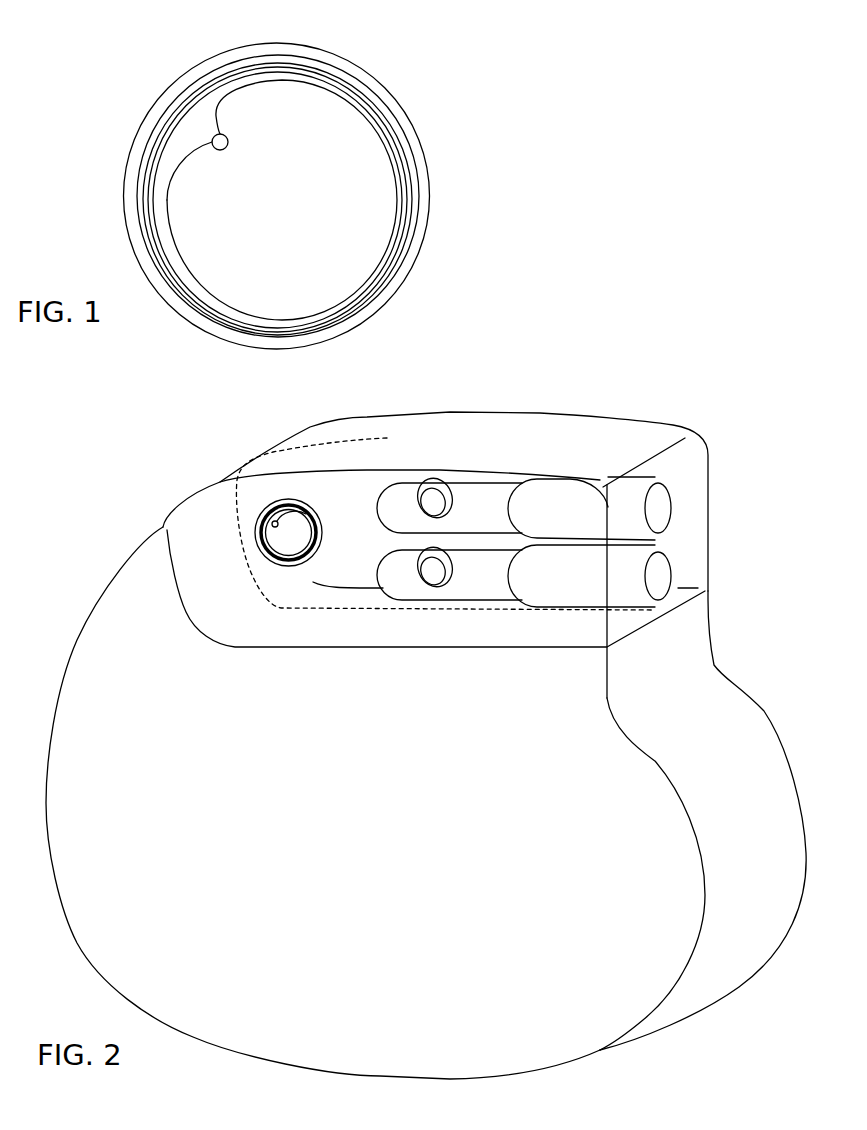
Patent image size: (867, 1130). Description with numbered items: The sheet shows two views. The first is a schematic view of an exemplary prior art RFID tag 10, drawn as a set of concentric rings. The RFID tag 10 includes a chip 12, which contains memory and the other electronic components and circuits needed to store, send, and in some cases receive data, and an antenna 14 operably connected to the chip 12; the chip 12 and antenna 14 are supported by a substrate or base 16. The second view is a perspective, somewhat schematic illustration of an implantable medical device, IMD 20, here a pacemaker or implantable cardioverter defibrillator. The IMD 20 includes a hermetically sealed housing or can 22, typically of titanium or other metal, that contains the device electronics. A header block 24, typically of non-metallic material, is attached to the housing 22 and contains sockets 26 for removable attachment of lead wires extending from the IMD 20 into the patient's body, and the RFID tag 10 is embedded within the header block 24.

In FIG. 1, the RFID tag 10 is at (415, 59).
In FIG. 2, the RFID tag 10 is at (257, 513).
In FIG. 1, the chip 12 is at (225, 150).
In FIG. 1, the antenna 14 is at (225, 77).
In FIG. 1, the substrate or base 16 is at (420, 153).
In FIG. 2, the implantable medical device (IMD) 20 is at (753, 474).
In FIG. 2, the housing or can 22 is at (749, 729).
In FIG. 2, the header block 24 is at (527, 428).
In FIG. 2, the socket 26 is at (657, 508).